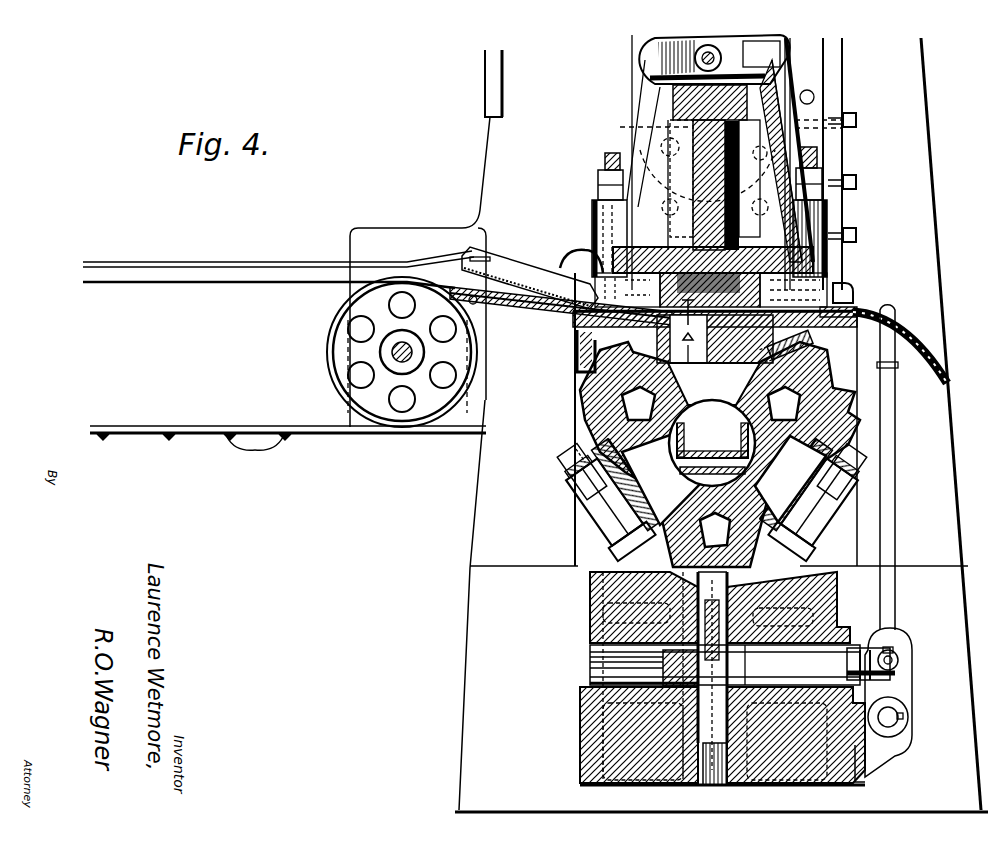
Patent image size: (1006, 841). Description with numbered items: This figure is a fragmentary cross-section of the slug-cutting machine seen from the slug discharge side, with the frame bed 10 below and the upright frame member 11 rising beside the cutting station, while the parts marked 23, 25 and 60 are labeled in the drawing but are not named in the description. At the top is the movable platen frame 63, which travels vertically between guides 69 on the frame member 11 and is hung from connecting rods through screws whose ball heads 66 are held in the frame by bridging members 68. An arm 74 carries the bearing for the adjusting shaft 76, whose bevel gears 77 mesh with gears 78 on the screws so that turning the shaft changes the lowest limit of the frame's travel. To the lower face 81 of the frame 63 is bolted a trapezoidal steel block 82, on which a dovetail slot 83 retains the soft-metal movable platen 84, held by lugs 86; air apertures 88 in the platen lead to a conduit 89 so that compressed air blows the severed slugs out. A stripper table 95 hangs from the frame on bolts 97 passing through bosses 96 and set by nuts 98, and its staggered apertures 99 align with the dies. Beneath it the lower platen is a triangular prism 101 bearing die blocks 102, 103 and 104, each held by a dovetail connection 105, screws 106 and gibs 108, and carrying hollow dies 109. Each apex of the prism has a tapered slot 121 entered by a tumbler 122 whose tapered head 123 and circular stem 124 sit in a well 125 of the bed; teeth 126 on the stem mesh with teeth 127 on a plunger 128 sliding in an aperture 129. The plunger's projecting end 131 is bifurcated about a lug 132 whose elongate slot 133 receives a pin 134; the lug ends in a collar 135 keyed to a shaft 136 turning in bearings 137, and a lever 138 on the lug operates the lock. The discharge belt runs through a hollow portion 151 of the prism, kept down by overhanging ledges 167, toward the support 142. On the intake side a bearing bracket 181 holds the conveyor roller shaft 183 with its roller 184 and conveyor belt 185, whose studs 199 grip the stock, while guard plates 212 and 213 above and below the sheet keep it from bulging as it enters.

The bed 10 is at (721, 425).
The upright frame member 11 is at (719, 538).
The head casting 23 is at (647, 58).
The inclined guide bar 25 is at (773, 67).
The vertical guide rod 60 is at (632, 43).
The movable platen frame 63 is at (670, 105).
The ball head 66 is at (660, 150).
The bridging members 68 is at (719, 128).
The guides 69 is at (809, 164).
The inwardly extending arm 74 is at (791, 40).
The adjusting shaft 76 is at (652, 71).
The bevel gears 77 is at (722, 58).
The gears 78 is at (656, 82).
The lower face 81 is at (585, 252).
The trapezoidal block of steel 82 is at (676, 180).
The dovetail slot 83 is at (682, 250).
The movable platen 84 is at (751, 180).
The lugs 86 is at (750, 252).
The communicating apertures 88 is at (845, 308).
The conduit 89 is at (848, 207).
The table or stripper plate 95 is at (578, 350).
The apertured bosses 96 is at (594, 221).
The bolts 97 is at (605, 160).
The nuts 98 is at (603, 191).
The staggered apertures 99 is at (575, 330).
The triangular prism 101 is at (580, 399).
The die block 102 is at (735, 360).
The die block 103 is at (683, 506).
The die block 104 is at (756, 516).
The dovetail connection 105 is at (577, 455).
The screws 106 is at (579, 410).
The gibs 108 is at (792, 350).
The hollow dies 109 is at (705, 352).
The tapered slot 121 is at (576, 378).
The tumblers 122 is at (698, 586).
The tapered head 123 is at (745, 584).
The circular stem 124 is at (712, 714).
The well 125 is at (725, 783).
The teeth 126 is at (655, 618).
The teeth 127 is at (592, 662).
The plunger 128 is at (740, 665).
The aperture 129 is at (600, 675).
The projecting end 131 is at (900, 655).
The upstanding lug 132 is at (906, 690).
The elongate slot 133 is at (893, 650).
The pin 134 is at (900, 668).
The collar 135 is at (903, 714).
The shaft 136 is at (905, 722).
The bearings 137 is at (880, 752).
The lever 138 is at (888, 514).
The support 142 is at (712, 455).
The hollow portion 151 is at (712, 443).
The overhanging ledges 167 is at (741, 429).
The bearing bracket 181 is at (416, 232).
The conveyor roller shaft 183 is at (390, 352).
The conveyor roller 184 is at (336, 326).
The conveyor belt 185 is at (305, 425).
The studs 199 is at (255, 452).
The guard plate 212 is at (518, 266).
The guard plate 213 is at (512, 314).